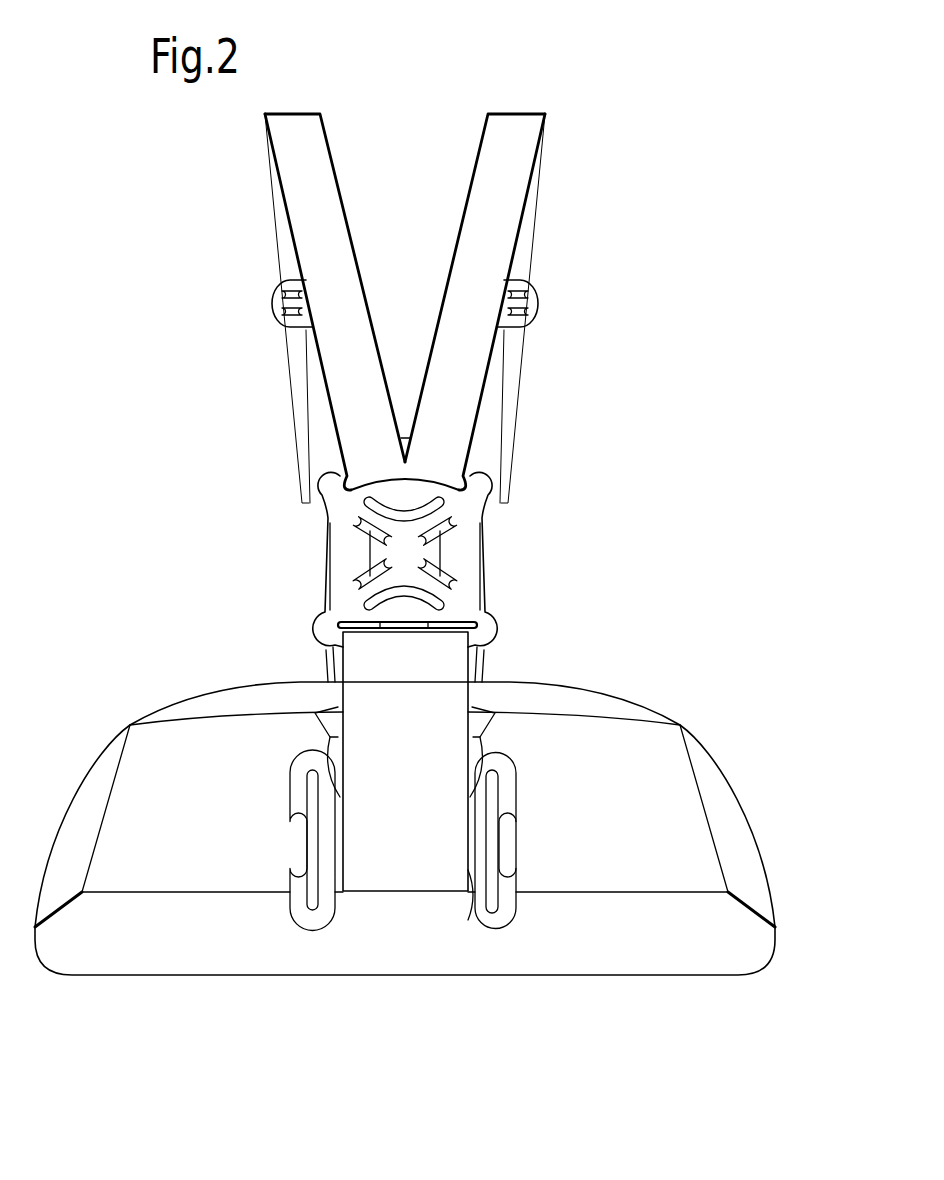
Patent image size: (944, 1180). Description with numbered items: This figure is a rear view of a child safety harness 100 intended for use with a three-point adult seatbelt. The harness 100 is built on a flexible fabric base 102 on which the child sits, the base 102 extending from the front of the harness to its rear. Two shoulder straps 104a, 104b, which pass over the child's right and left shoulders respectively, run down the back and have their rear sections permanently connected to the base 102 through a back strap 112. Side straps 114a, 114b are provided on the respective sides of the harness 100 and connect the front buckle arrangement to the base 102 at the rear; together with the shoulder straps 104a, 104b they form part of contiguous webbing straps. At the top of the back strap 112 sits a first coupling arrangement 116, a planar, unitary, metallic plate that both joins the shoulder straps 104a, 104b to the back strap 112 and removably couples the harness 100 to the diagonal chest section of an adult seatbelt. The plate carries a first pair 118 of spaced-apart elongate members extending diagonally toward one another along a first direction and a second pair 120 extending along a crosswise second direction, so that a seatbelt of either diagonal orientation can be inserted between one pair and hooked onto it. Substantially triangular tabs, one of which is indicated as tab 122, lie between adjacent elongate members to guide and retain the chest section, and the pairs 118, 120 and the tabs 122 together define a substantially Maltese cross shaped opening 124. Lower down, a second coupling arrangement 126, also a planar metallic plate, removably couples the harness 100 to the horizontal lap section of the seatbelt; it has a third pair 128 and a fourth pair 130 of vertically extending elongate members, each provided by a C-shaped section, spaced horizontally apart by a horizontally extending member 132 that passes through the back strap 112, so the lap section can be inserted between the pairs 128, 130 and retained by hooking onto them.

The child safety harness 100 is at (583, 96).
The flexible fabric base 102 is at (673, 943).
The shoulder strap 104a is at (500, 222).
The shoulder strap 104b is at (303, 208).
The back strap 112 is at (385, 797).
The side strap 114a is at (727, 810).
The side strap 114b is at (82, 800).
The first coupling arrangement 116 is at (468, 611).
The first pair of spaced-apart elongate members 118 is at (388, 541).
The second pair of spaced-apart elongate members 120 is at (430, 523).
The substantially triangular tab 122 is at (405, 604).
The Maltese cross shaped opening 124 is at (396, 585).
The second coupling arrangement 126 is at (329, 906).
The third pair of spaced-apart elongate members 128 is at (507, 812).
The fourth pair of spaced-apart elongate members 130 is at (297, 878).
The horizontally extending member 132 is at (474, 875).